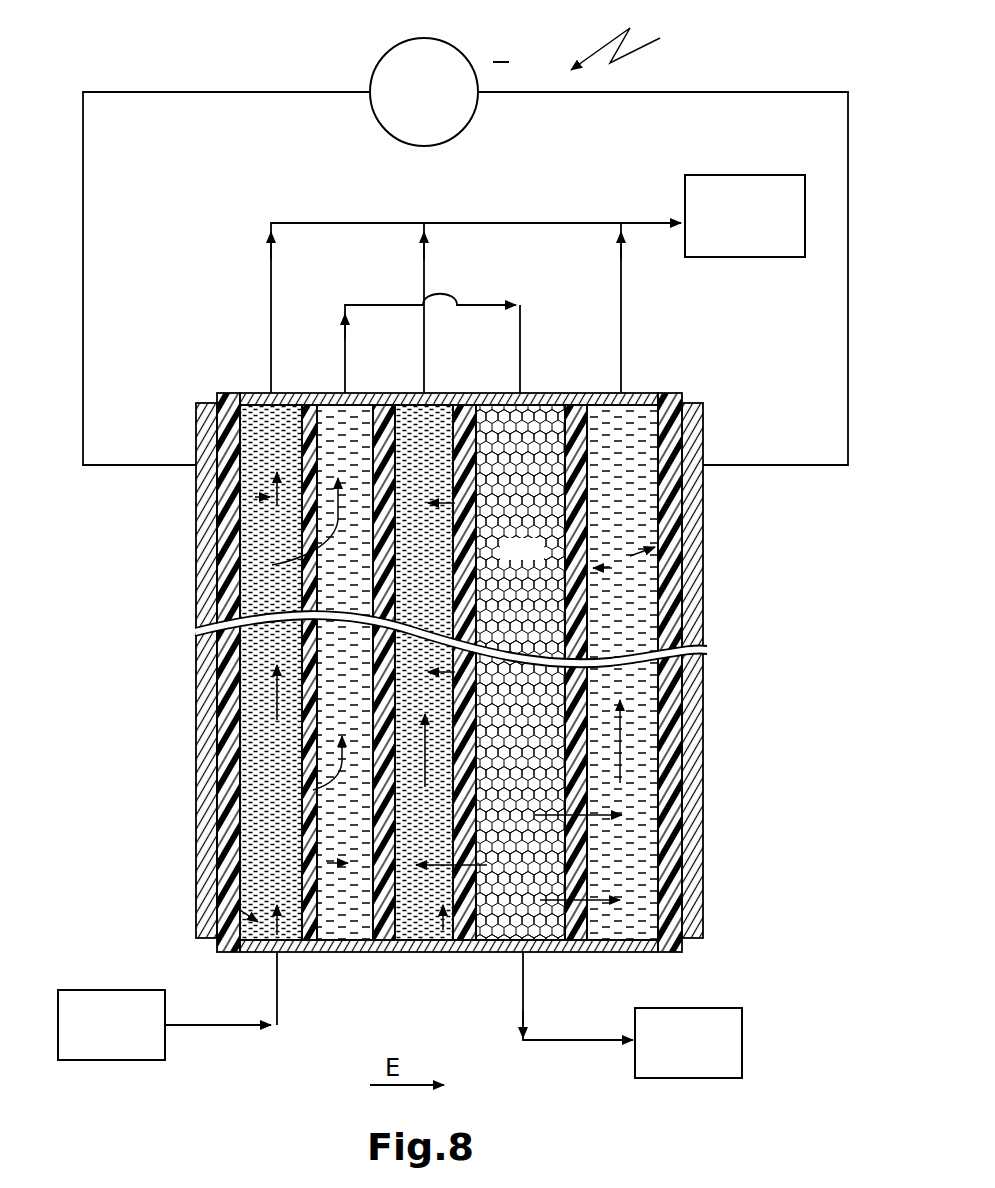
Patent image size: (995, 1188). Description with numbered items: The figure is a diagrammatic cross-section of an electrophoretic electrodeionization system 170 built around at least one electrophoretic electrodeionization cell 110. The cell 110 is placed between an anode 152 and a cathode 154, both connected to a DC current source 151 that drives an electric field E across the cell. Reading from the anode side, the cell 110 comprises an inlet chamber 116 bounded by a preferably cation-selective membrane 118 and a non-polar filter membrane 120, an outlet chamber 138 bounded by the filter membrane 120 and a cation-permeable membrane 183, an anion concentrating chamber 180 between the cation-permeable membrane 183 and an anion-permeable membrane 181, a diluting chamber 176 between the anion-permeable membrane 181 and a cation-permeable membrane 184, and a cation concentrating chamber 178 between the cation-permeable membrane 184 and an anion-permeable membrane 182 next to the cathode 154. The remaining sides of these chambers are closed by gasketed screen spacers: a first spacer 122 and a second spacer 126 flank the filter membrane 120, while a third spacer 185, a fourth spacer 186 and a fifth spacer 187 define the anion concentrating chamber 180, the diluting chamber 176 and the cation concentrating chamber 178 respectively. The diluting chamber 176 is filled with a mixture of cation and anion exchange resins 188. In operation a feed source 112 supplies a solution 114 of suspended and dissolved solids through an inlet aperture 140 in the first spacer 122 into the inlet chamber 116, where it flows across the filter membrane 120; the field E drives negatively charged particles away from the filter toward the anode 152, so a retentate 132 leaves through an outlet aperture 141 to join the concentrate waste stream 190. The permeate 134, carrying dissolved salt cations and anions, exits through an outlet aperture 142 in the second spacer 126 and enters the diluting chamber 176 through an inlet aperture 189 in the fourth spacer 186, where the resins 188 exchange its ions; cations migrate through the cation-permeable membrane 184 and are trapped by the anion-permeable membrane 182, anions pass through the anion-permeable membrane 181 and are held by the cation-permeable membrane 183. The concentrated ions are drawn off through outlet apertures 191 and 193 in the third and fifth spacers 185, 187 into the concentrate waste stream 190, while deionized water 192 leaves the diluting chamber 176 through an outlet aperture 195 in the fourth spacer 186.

The electrophoretic electrodeionization cell 110 is at (498, 1066).
The feed source 112 is at (133, 990).
The solution 114 is at (225, 1027).
The inlet chamber 116 is at (233, 503).
The membrane 118 is at (233, 572).
The filter membrane 120 is at (307, 393).
The first spacer 122 is at (250, 393).
The second spacer 126 is at (354, 393).
The retentate 132 is at (271, 265).
The permeate 134 is at (383, 303).
The outlet chamber 138 is at (227, 867).
The inlet aperture 140 is at (240, 910).
The outlet aperture 141 is at (233, 421).
The outlet aperture 142 is at (338, 388).
The DC current source 151 is at (452, 57).
The anode 152 is at (203, 792).
The cathode 154 is at (690, 720).
The electrophoretic electrodeionization system 170 is at (634, 49).
The diluting chamber 176 is at (540, 559).
The cation concentrating chamber 178 is at (700, 532).
The anion concentrating chamber 180 is at (443, 953).
The anion-permeable membrane 181 is at (458, 393).
The anion-permeable membrane 182 is at (672, 675).
The cation-permeable membrane 183 is at (392, 953).
The cation-permeable membrane 184 is at (633, 384).
The third spacer 185 is at (432, 393).
The fourth spacer 186 is at (543, 393).
The fifth spacer 187 is at (653, 393).
The mixture of cation and anion exchange resins 188 is at (662, 767).
The inlet aperture 189 is at (532, 385).
The concentrate waste stream 190 is at (742, 176).
The outlet aperture 191 is at (415, 388).
The deionized water 192 is at (697, 1078).
The outlet aperture 193 is at (632, 382).
The outlet aperture 195 is at (538, 963).